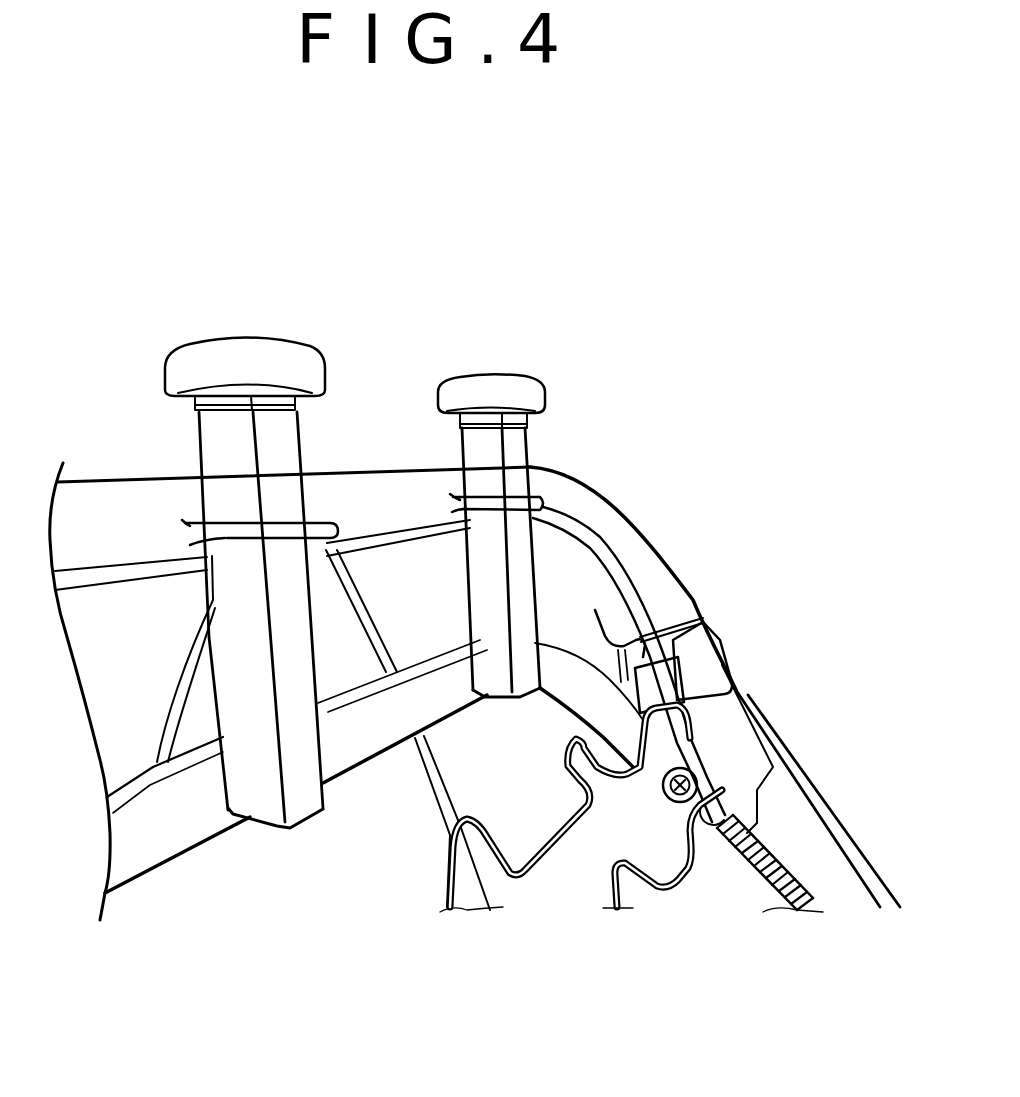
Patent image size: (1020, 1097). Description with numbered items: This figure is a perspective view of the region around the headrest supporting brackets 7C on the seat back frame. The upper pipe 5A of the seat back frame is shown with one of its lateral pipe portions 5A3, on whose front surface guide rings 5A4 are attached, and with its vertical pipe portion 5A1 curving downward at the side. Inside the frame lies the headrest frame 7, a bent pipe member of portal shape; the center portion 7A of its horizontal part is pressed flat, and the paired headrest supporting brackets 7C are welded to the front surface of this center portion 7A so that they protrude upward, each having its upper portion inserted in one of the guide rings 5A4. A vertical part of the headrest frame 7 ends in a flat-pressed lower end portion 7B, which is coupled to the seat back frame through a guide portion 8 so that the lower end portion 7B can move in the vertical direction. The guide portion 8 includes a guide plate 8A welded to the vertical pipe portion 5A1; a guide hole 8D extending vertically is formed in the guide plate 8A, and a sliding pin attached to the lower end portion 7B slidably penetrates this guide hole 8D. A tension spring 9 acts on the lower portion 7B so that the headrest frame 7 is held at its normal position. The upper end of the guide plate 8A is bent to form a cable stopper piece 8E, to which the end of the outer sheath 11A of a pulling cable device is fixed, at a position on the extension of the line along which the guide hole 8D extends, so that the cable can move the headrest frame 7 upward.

The upper pipe 5A is at (392, 637).
The vertical pipe portion 5A1 is at (751, 629).
The lateral pipe portion 5A3 is at (400, 433).
The guide ring 5A4 is at (314, 570).
The headrest frame 7 is at (177, 851).
The center portion 7A is at (480, 776).
The lower end portion 7B is at (586, 806).
The headrest supporting bracket 7C is at (360, 582).
The guide portion 8 is at (818, 787).
The guide plate 8A is at (778, 770).
The guide hole 8D is at (722, 720).
The cable stopper piece 8E is at (672, 609).
The tension spring 9 is at (758, 873).
The outer sheath 11A is at (631, 634).